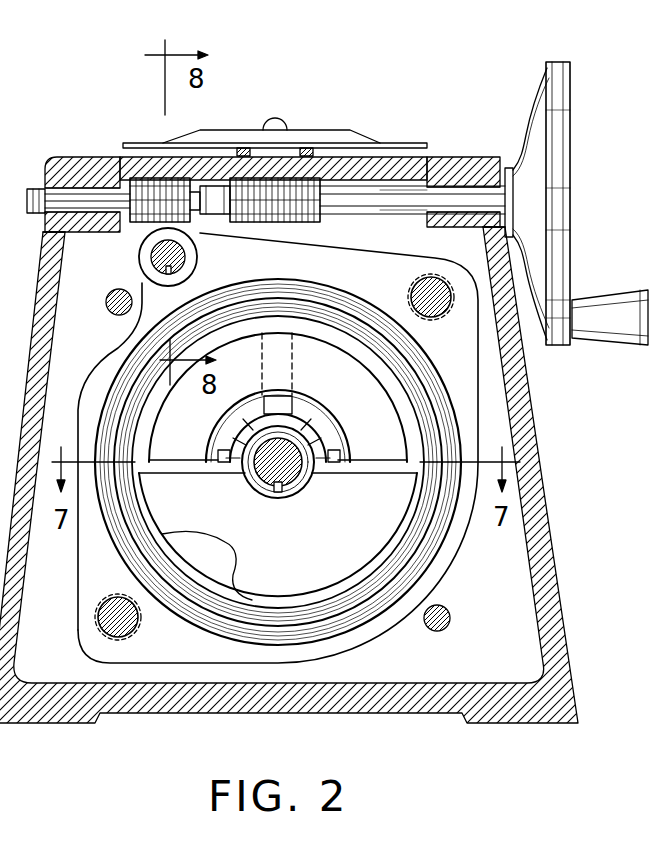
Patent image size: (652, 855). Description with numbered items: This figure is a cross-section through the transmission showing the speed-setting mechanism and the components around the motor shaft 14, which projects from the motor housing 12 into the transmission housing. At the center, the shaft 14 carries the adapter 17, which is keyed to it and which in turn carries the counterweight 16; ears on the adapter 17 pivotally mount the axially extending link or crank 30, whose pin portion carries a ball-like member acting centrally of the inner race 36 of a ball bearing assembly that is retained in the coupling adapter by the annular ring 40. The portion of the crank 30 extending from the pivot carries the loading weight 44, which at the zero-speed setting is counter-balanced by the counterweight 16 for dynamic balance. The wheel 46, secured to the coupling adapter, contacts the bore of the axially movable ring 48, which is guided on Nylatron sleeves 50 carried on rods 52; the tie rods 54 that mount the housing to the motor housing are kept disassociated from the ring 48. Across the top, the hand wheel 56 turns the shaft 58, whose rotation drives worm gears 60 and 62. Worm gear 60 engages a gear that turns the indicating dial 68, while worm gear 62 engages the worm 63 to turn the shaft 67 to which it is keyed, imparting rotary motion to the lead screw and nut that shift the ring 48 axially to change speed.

The motor housing 12 is at (4, 318).
The motor shaft 14 is at (265, 472).
The counterweight 16 is at (238, 548).
The adapter 17 is at (350, 549).
The crank 30 is at (236, 420).
The inner race 36 is at (300, 425).
The annular ring 40 is at (332, 466).
The loading weight 44 is at (378, 422).
The wheel 46 is at (320, 304).
The ring 48 is at (447, 538).
The sleeves 50 is at (438, 316).
The rods 52 is at (431, 278).
The tie rods 54 is at (110, 312).
The hand wheel 56 is at (560, 98).
The shaft 58 is at (410, 198).
The worm gear 60 is at (322, 216).
The worm gear 62 is at (128, 172).
The worm 63 is at (200, 254).
The shaft 67 is at (168, 258).
The indicating dial 68 is at (362, 142).